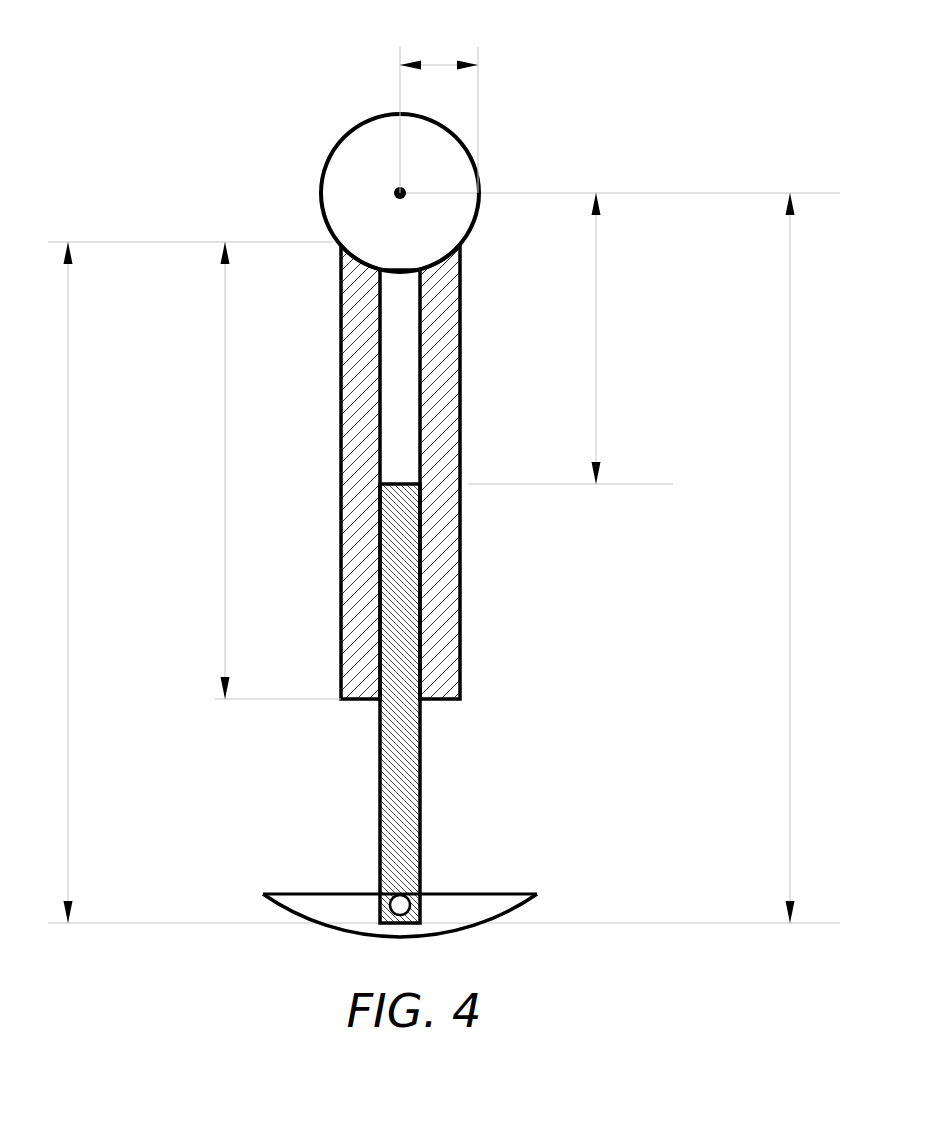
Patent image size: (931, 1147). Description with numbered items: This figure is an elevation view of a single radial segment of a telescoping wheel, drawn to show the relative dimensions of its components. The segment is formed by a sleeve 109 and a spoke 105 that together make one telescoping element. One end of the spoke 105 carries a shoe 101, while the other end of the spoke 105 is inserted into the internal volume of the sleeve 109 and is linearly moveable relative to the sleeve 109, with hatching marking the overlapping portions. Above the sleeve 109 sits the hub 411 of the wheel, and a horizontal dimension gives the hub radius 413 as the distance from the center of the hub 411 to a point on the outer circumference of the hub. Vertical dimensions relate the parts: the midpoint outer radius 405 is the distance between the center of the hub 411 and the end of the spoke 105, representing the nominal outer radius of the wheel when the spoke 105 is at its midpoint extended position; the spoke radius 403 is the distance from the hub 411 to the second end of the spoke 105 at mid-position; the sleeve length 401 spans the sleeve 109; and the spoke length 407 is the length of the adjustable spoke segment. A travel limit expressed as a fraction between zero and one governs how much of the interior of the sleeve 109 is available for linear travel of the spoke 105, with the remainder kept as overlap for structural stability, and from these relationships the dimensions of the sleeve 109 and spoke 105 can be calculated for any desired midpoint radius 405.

The shoe 101 is at (471, 893).
The spoke 105 is at (421, 778).
The sleeve 109 is at (340, 397).
The sleeve length 401 is at (226, 508).
The spoke radius 403 is at (595, 405).
The midpoint outer radius 405 is at (789, 799).
The spoke length 407 is at (69, 713).
The hub 411 is at (400, 190).
The hub radius 413 is at (439, 63).